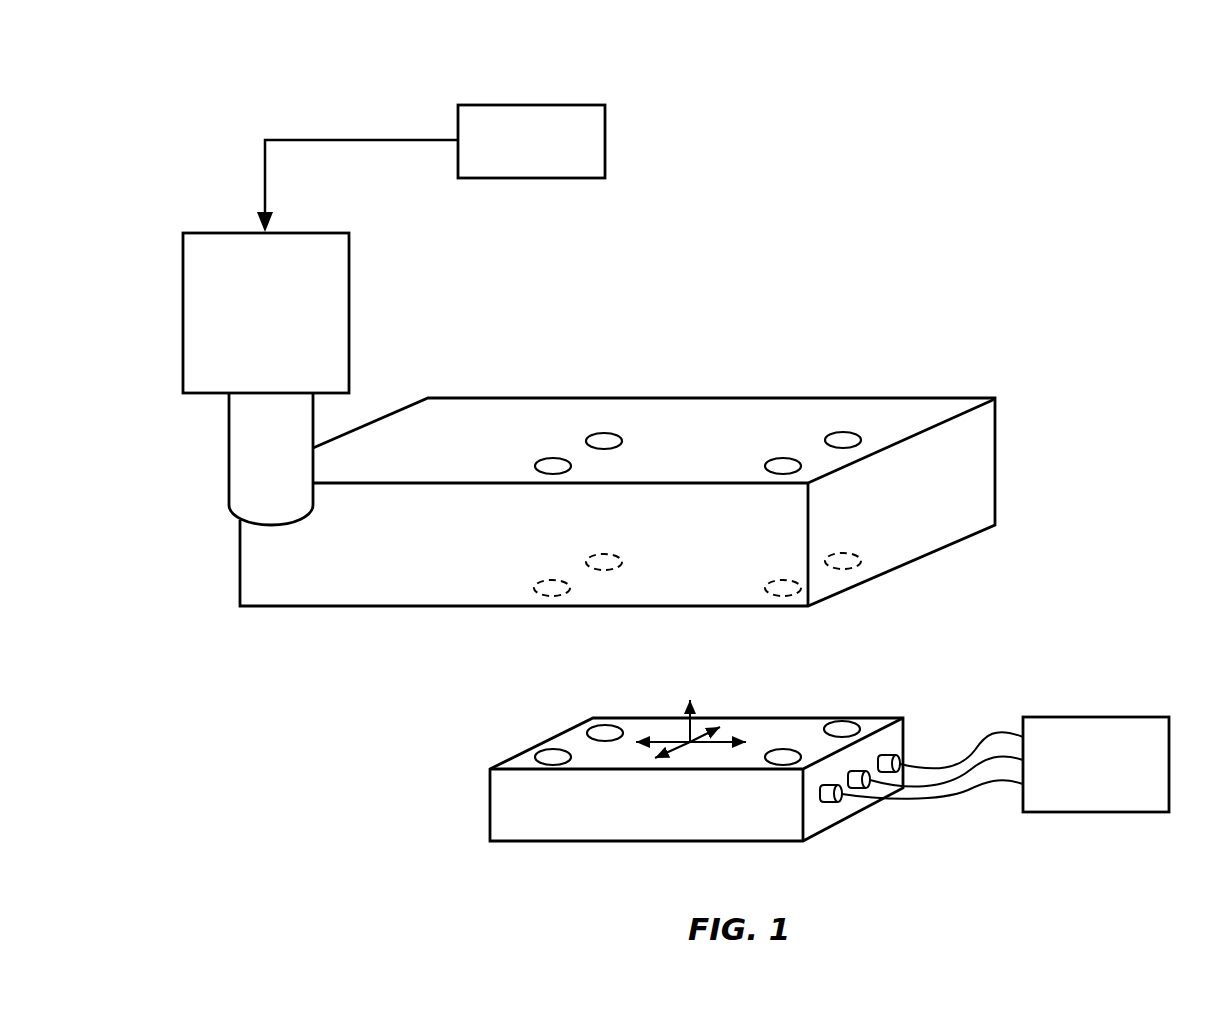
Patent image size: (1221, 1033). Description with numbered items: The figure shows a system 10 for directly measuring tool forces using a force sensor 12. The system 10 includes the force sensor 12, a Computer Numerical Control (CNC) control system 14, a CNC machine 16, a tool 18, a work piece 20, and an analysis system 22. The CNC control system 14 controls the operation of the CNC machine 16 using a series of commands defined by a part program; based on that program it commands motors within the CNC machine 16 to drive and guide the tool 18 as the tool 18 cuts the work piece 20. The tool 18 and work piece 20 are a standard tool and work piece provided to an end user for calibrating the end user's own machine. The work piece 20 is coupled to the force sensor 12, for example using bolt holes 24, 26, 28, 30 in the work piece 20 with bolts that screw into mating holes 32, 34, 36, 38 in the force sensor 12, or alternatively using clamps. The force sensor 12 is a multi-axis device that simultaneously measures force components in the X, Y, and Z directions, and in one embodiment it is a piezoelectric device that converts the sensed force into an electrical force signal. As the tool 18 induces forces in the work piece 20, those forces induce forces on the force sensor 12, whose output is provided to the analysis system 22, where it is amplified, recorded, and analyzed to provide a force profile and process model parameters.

The system 10 is at (874, 100).
The force sensor 12 is at (878, 717).
The CNC control system 14 is at (552, 105).
The CNC machine 16 is at (349, 282).
The tool 18 is at (230, 468).
The work piece 20 is at (860, 399).
The analysis system 22 is at (1115, 717).
The bolt hole 24 is at (555, 458).
The bolt hole 26 is at (603, 433).
The bolt hole 28 is at (840, 432).
The bolt hole 30 is at (790, 458).
The mating hole 32 is at (553, 749).
The mating hole 34 is at (605, 725).
The mating hole 36 is at (842, 721).
The mating hole 38 is at (783, 749).